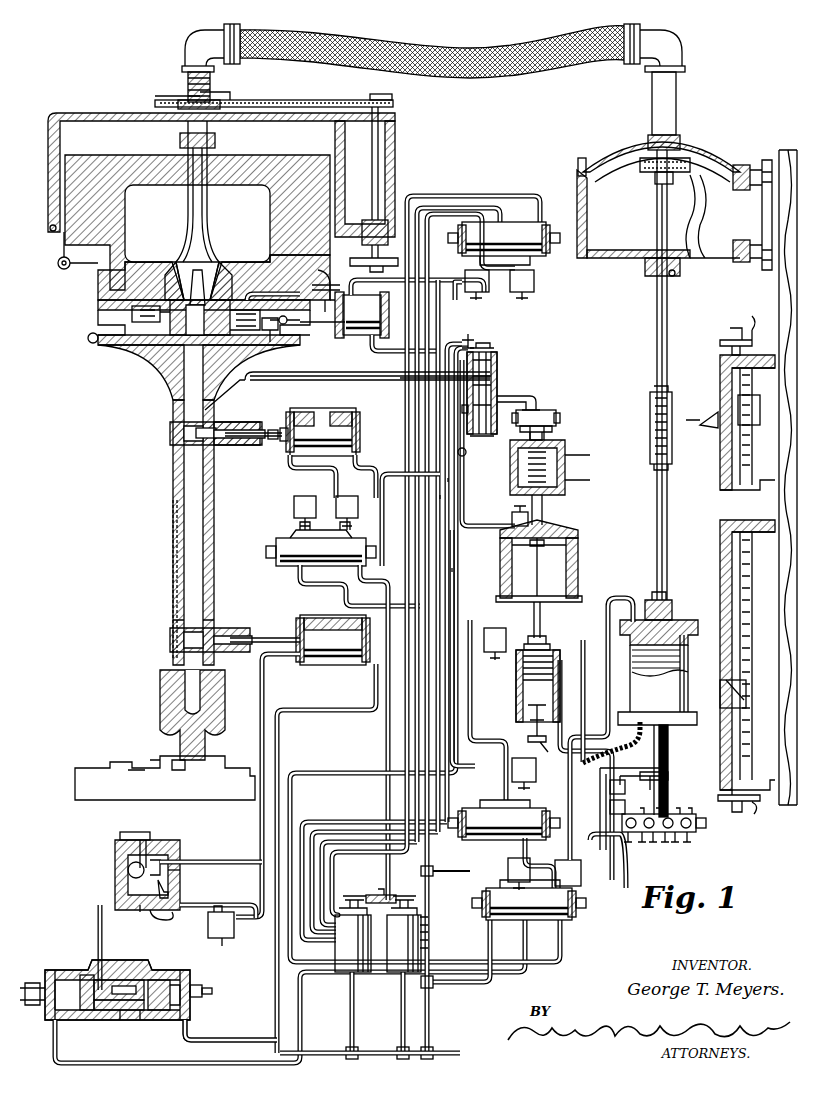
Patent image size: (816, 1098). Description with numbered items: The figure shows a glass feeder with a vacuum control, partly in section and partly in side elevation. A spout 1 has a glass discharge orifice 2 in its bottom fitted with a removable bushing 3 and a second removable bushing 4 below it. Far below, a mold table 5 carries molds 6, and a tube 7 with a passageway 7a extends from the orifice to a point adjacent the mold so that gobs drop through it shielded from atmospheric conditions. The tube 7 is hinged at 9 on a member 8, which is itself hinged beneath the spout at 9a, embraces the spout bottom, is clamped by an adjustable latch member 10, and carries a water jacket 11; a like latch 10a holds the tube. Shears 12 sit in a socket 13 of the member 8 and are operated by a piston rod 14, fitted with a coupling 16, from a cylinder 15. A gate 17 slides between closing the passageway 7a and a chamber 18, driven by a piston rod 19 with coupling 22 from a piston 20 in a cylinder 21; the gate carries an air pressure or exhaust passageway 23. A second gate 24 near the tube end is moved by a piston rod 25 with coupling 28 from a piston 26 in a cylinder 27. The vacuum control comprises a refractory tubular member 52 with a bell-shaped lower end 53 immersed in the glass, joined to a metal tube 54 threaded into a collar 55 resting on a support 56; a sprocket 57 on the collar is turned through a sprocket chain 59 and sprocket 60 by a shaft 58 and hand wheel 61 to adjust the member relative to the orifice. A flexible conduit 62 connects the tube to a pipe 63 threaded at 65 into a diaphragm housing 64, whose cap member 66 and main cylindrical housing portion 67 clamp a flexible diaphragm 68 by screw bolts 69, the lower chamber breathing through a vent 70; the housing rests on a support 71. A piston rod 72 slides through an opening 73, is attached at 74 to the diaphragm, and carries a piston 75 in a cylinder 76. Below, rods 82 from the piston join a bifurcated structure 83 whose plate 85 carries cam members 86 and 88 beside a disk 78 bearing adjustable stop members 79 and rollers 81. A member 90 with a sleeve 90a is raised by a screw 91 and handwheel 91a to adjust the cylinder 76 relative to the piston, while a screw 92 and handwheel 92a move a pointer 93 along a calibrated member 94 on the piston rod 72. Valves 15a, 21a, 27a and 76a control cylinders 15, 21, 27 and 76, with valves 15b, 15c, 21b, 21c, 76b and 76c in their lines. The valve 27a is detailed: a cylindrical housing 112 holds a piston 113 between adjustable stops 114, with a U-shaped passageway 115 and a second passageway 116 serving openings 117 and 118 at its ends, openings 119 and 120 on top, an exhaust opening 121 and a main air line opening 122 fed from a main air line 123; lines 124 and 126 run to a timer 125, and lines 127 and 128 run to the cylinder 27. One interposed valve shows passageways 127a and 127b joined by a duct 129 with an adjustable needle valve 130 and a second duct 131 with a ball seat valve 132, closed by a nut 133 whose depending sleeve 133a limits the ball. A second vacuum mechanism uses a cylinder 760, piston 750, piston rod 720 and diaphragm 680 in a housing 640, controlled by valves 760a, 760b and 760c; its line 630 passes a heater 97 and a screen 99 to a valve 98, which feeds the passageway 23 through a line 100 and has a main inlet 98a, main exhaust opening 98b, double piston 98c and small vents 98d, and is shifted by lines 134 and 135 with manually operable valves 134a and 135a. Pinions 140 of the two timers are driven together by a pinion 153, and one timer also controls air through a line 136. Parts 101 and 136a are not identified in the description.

The casing body 1 is at (120, 160).
The valve seat 2 is at (180, 282).
The valve member 3 is at (212, 285).
The needle 4 is at (197, 290).
The base 5 is at (115, 780).
The lower block 6 is at (160, 690).
The column 7 is at (176, 625).
The column tube 7a is at (182, 378).
The lower housing 8 is at (108, 300).
The flange 9 is at (118, 340).
The bolt 9a is at (65, 270).
The arm 10 is at (327, 286).
The pivot 10a is at (271, 343).
The bearing 11 is at (222, 348).
The stem 12 is at (196, 336).
The valve 13 is at (131, 318).
The rod 14 is at (322, 323).
The cylinder 15 is at (360, 334).
The cylinder 15a is at (510, 224).
The valve 15b is at (476, 288).
The valve 15c is at (522, 284).
The pin 16 is at (285, 323).
The flange 17 is at (195, 446).
The boss 18 is at (236, 446).
The rod 19 is at (266, 430).
The cylinder head 20 is at (320, 412).
The cylinder 21 is at (357, 428).
The cylinder 21a is at (300, 548).
The valve 21b is at (294, 510).
The valve 21c is at (358, 510).
The nut 22 is at (276, 441).
The port 23 is at (200, 428).
The flange 24 is at (188, 641).
The rod 25 is at (256, 636).
The cylinder 26 is at (322, 624).
The cylinder 27 is at (336, 660).
The fitting 27a is at (66, 972).
The conduit 28 is at (172, 541).
The spindle 52 is at (208, 196).
The nozzle 53 is at (213, 238).
The threaded pipe 54 is at (210, 86).
The nut 55 is at (185, 100).
The cover 56 is at (140, 118).
The plate 57 is at (165, 98).
The strut 58 is at (380, 161).
The plate 59 is at (288, 100).
The clamp 60 is at (386, 100).
The disc 61 is at (388, 258).
The hose 62 is at (489, 48).
The pipe 63 is at (677, 84).
The bracket 64 is at (735, 168).
The nut 65 is at (680, 136).
The dome 66 is at (618, 155).
The tank 67 is at (577, 213).
The gland 68 is at (625, 174).
The bolt 69 is at (581, 160).
The tank bottom 70 is at (612, 252).
The panel 71 is at (790, 225).
The rod 72 is at (668, 306).
The pin 73 is at (675, 274).
The nut 74 is at (674, 178).
The cylinder head 75 is at (678, 622).
The cylinder 76 is at (632, 690).
The cylinder 76a is at (543, 921).
The valve 76b is at (519, 892).
The valve 76c is at (578, 876).
The manifold 78 is at (690, 834).
The port 79 is at (672, 814).
The plug 81 is at (706, 822).
The rod 82 is at (670, 762).
The arm 83 is at (670, 778).
The bracket 85 is at (605, 848).
The block 86 is at (618, 812).
The block 88 is at (620, 790).
The housing 90 is at (712, 720).
The indicator 90a is at (744, 690).
The scale 91 is at (742, 644).
The knob 91a is at (746, 810).
The housing 92 is at (744, 408).
The handle 92a is at (720, 343).
The cone 93 is at (706, 428).
The gauge 94 is at (670, 400).
The spring housing 97 is at (566, 471).
The valve 98 is at (497, 366).
The port 98a is at (497, 408).
The port 98b is at (463, 410).
The port 98c is at (497, 376).
The port 98d is at (497, 358).
The regulator 99 is at (550, 416).
The conduit 100 is at (372, 378).
The valve 101 is at (526, 706).
The cylinder 112 is at (165, 980).
The piston 113 is at (107, 1008).
The fitting 114 is at (198, 990).
The piston 115 is at (153, 1012).
The rod 116 is at (139, 1018).
The head 117 is at (55, 1022).
The head 118 is at (186, 1016).
The boss 119 is at (90, 972).
The port 120 is at (135, 985).
The plug 121 is at (118, 978).
The rod 122 is at (124, 1014).
The conduit 123 is at (345, 1055).
The conduit 124 is at (54, 1058).
The cylinder 125 is at (351, 960).
The conduit 126 is at (240, 1040).
The conduit 127 is at (242, 860).
The spring 127a is at (135, 900).
The port 127b is at (170, 862).
The valve 128 is at (252, 918).
The port 129 is at (182, 873).
The valve 130 is at (182, 888).
The valve body 131 is at (116, 870).
The stem 132 is at (145, 840).
The cap 133 is at (133, 840).
The ball 133a is at (128, 864).
The conduit 134 is at (450, 480).
The valve 134a is at (464, 456).
The conduit 135 is at (442, 497).
The valve 135a is at (472, 350).
The conduit 136 is at (456, 570).
The valve 136a is at (518, 522).
The valve 140 is at (352, 898).
The gear 153 is at (392, 894).
The stem 630 is at (543, 506).
The diaphragm housing 640 is at (579, 568).
The diaphragm 680 is at (528, 546).
The rod 720 is at (541, 613).
The piston 750 is at (547, 641).
The cylinder 760 is at (560, 675).
The cylinder 760a is at (480, 820).
The valve 760b is at (495, 630).
The valve 760c is at (520, 776).